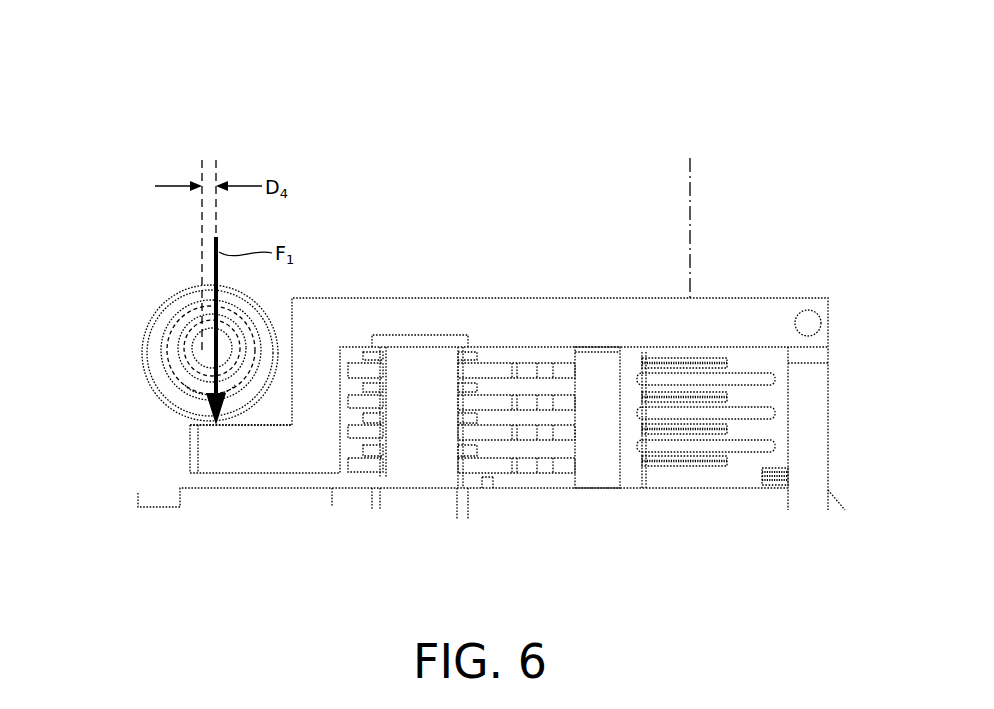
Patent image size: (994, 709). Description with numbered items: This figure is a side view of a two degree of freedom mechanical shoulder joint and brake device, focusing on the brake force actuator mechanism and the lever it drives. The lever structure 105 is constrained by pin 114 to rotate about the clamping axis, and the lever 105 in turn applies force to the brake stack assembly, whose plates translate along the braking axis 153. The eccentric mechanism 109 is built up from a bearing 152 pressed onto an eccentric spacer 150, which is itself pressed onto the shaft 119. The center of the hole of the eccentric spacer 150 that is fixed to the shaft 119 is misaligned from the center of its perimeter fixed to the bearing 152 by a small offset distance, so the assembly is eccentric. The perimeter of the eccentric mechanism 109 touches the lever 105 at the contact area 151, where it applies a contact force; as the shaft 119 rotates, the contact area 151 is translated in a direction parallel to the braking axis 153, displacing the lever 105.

The lever structure 105 is at (530, 298).
The eccentric mechanism 109 is at (158, 308).
The pin 114 is at (808, 323).
The shaft 119 is at (200, 352).
The eccentric spacer 150 is at (205, 386).
The contact area 151 is at (215, 425).
The bearing 152 is at (157, 340).
The braking axis 153 is at (690, 212).